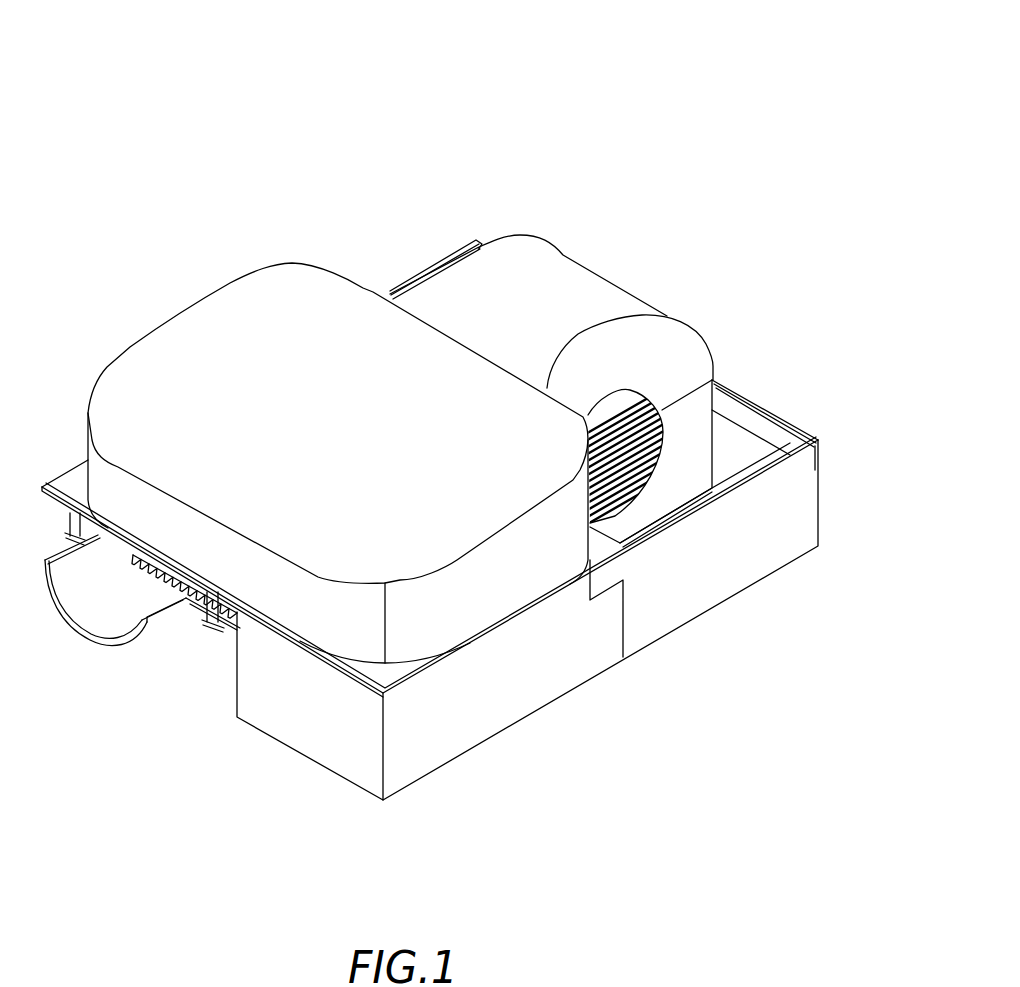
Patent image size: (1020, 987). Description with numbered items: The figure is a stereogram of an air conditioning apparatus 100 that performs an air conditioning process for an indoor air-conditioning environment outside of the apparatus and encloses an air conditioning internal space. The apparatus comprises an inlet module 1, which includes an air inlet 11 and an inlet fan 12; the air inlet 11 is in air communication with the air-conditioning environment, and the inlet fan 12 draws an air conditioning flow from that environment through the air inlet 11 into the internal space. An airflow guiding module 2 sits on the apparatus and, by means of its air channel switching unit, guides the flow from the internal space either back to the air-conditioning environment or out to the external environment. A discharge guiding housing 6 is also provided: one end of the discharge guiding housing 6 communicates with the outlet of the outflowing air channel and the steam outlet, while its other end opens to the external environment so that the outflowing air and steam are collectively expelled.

The air conditioning apparatus 100 is at (750, 80).
The inlet module 1 is at (492, 108).
The air inlet 11 is at (427, 270).
The inlet fan 12 is at (613, 450).
The airflow guiding module 2 is at (222, 272).
The discharge guiding housing 6 is at (98, 612).